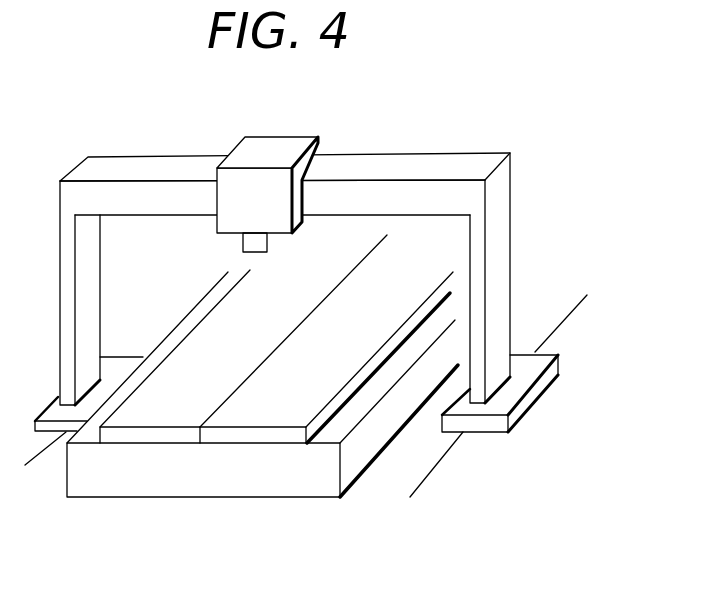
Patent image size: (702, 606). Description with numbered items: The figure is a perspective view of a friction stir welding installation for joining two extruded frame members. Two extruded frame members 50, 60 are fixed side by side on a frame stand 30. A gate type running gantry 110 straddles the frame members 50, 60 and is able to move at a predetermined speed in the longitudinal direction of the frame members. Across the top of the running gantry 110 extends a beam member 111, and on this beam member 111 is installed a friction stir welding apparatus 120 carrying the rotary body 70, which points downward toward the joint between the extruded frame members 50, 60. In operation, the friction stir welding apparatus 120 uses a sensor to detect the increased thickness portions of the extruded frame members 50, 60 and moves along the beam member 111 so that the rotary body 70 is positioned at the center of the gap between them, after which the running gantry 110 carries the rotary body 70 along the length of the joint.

The frame stand 30 is at (302, 483).
The extruded frame member 50 is at (240, 438).
The extruded frame member 60 is at (153, 433).
The rotary body 70 is at (253, 252).
The running gantry 110 is at (510, 275).
The beam member 111 is at (403, 162).
The friction stir welding apparatus 120 is at (265, 157).